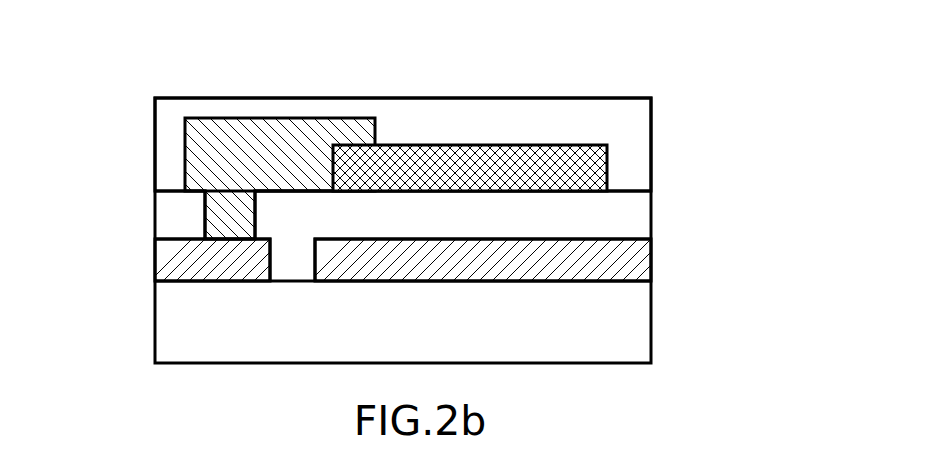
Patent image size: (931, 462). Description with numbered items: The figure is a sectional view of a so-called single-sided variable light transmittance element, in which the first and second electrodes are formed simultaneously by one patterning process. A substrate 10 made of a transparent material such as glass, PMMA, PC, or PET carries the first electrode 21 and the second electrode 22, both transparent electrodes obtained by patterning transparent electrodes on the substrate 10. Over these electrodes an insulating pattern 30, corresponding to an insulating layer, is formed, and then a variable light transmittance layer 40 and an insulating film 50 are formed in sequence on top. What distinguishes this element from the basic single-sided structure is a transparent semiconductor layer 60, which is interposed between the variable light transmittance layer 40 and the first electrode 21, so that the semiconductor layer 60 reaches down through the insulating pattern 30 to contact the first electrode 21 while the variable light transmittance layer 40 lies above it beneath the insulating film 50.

The substrate 10 is at (618, 322).
The first electrode 21 is at (192, 262).
The second electrode 22 is at (618, 262).
The insulating pattern 30 is at (618, 214).
The variable light transmittance layer 40 is at (608, 162).
The insulating film 50 is at (618, 124).
The transparent semiconductor layer 60 is at (237, 155).